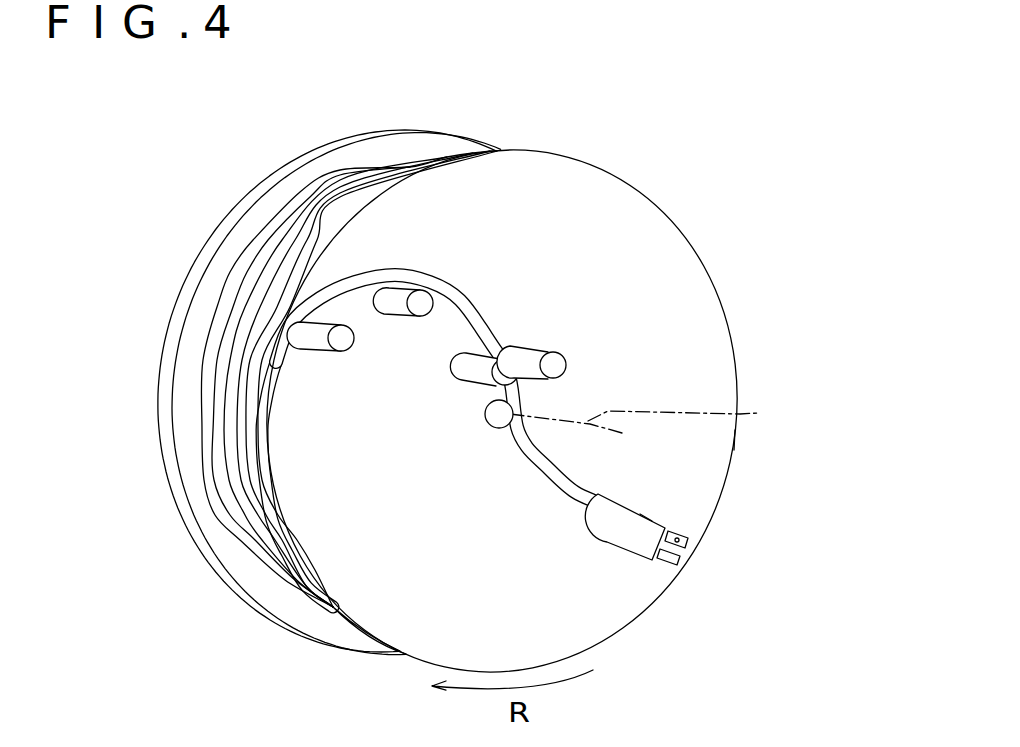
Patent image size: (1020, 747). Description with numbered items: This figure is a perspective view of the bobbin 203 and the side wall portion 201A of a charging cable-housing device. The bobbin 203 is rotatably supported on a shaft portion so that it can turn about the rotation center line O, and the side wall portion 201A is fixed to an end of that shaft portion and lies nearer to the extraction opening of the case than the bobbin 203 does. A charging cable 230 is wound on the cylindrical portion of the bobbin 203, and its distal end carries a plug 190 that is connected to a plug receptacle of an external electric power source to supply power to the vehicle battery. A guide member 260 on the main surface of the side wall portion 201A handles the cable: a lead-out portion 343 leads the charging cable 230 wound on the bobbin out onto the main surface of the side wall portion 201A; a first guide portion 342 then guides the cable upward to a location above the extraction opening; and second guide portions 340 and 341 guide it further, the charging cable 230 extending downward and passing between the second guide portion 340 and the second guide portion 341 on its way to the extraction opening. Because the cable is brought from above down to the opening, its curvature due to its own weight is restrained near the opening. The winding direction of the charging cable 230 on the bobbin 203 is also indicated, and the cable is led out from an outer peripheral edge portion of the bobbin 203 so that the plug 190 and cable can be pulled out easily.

The bobbin 203 is at (472, 398).
The charging cable 230 is at (460, 295).
The guide member 260 is at (450, 237).
The second guide portion 340 is at (566, 367).
The second guide portion 341 is at (490, 345).
The first guide portion 342 is at (393, 295).
The lead-out portion 343 is at (300, 328).
The plug 190 is at (640, 509).
The rotation center line O is at (647, 415).
The side wall portion 201A is at (713, 447).